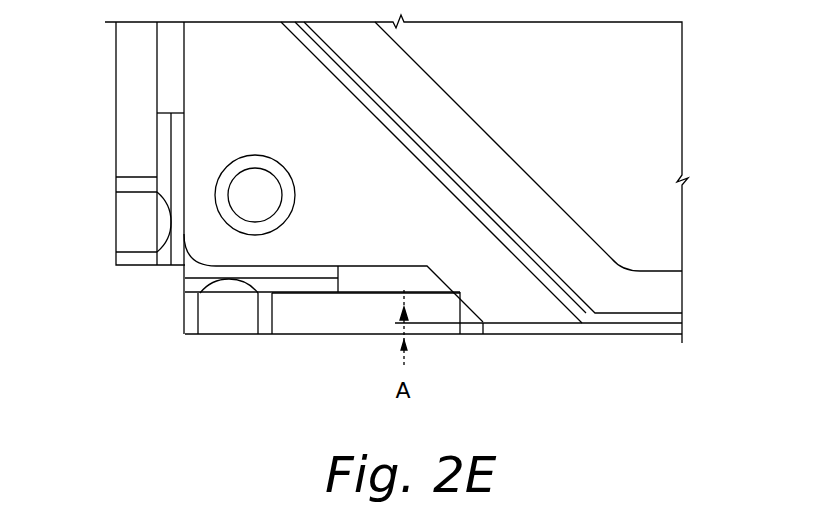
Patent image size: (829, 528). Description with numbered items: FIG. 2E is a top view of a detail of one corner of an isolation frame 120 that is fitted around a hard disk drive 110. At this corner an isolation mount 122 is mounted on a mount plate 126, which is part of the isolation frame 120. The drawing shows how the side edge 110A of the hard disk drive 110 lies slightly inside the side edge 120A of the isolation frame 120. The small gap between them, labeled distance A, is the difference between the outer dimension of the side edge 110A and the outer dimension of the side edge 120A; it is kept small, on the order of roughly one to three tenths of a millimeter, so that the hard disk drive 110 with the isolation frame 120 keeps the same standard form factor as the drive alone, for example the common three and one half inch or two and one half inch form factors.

The hard disk drive 110 is at (670, 92).
The side edge of hard disk drive 110A is at (532, 323).
The isolation frame 120 is at (228, 337).
The side edge of isolation frame 120A is at (333, 337).
The isolation mount 122 is at (265, 182).
The mount plate 126 is at (205, 80).